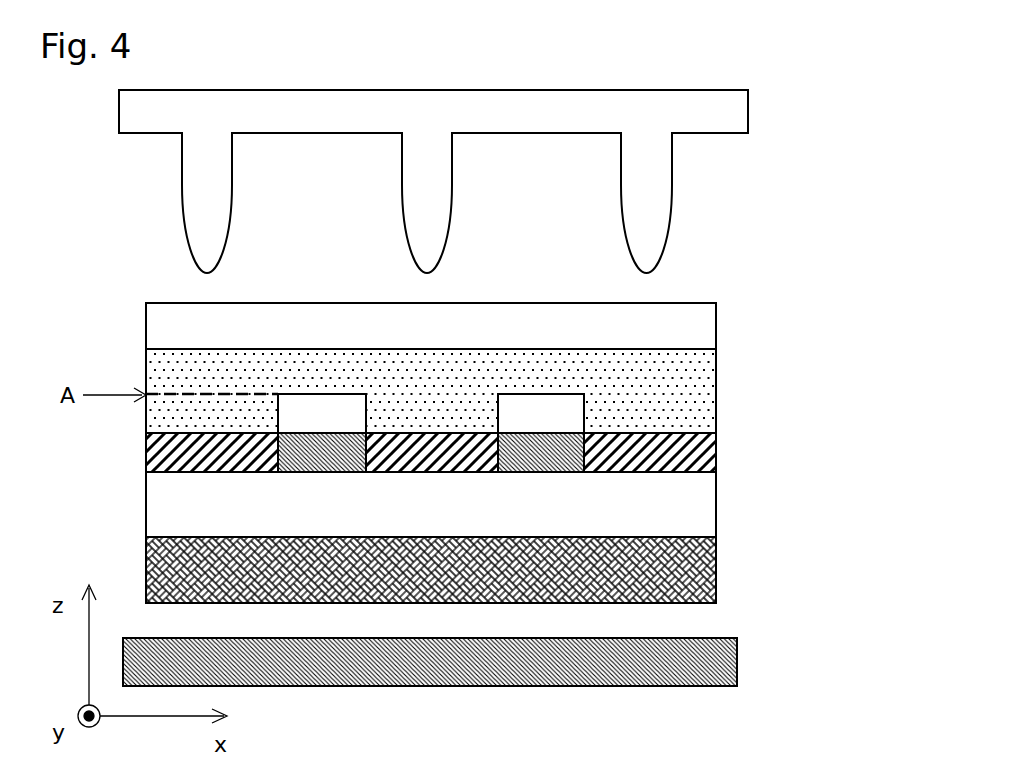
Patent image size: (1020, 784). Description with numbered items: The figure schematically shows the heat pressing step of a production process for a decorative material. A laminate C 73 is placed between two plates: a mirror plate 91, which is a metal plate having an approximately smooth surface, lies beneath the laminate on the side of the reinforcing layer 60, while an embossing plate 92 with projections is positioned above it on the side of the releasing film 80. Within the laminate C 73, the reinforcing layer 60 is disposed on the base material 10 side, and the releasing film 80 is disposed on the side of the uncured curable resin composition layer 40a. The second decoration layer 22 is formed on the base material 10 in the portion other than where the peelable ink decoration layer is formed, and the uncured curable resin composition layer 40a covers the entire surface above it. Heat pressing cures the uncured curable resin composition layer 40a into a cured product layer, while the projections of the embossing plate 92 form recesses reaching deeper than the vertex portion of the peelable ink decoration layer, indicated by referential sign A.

The embossing plate 92 is at (725, 123).
The laminate C 73 is at (842, 318).
The releasing film 80 is at (708, 332).
The uncured curable resin composition layer 40a is at (708, 403).
The second decoration layer 22 is at (708, 453).
The base material 10 is at (708, 513).
The reinforcing layer 60 is at (708, 574).
The mirror plate 91 is at (720, 663).